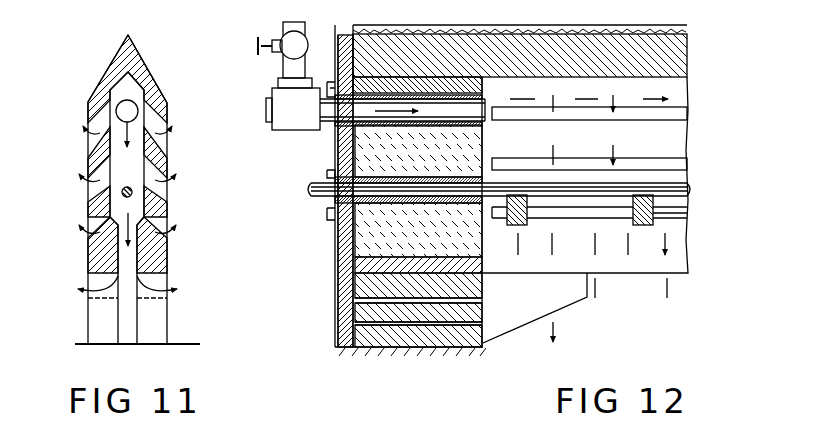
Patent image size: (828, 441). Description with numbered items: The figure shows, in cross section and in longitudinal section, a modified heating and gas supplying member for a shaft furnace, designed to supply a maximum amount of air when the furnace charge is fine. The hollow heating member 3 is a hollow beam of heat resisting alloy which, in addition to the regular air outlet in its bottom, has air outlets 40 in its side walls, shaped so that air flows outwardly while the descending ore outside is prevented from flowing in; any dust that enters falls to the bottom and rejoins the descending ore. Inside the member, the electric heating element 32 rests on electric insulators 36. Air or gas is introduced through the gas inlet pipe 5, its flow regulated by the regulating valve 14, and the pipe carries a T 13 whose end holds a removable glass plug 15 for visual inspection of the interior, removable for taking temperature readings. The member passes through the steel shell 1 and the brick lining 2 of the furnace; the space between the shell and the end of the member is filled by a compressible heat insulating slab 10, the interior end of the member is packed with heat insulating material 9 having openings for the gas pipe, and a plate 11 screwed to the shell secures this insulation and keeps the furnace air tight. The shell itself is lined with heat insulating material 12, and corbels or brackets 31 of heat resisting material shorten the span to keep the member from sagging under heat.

In FIG. 12, the steel shell 1 is at (345, 330).
In FIG. 12, the wall or brick lining 2 is at (393, 313).
In FIG. 11, the hollow heating member 3 is at (100, 82).
In FIG. 12, the hollow heating member 3 is at (690, 55).
In FIG. 11, the gas inlet pipe 5 is at (117, 110).
In FIG. 12, the gas inlet pipe 5 is at (482, 111).
In FIG. 12, the heat insulating material 9 is at (387, 157).
In FIG. 12, the compressible heat insulating slab 10 is at (347, 238).
In FIG. 12, the plate 11 is at (337, 290).
In FIG. 12, the heat insulating material 12 is at (347, 350).
In FIG. 12, the T 13 is at (296, 113).
In FIG. 12, the regulating valve 14 is at (283, 50).
In FIG. 12, the removable glass plug 15 is at (258, 110).
In FIG. 11, the corbels or brackets 31 is at (100, 309).
In FIG. 12, the corbels or brackets 31 is at (537, 309).
In FIG. 11, the electric heating element 32 is at (122, 192).
In FIG. 12, the electric heating element 32 is at (306, 192).
In FIG. 11, the electric insulators 36 is at (127, 212).
In FIG. 12, the electric insulators 36 is at (688, 220).
In FIG. 11, the air outlets 40 is at (93, 143).
In FIG. 12, the air outlets 40 is at (688, 115).